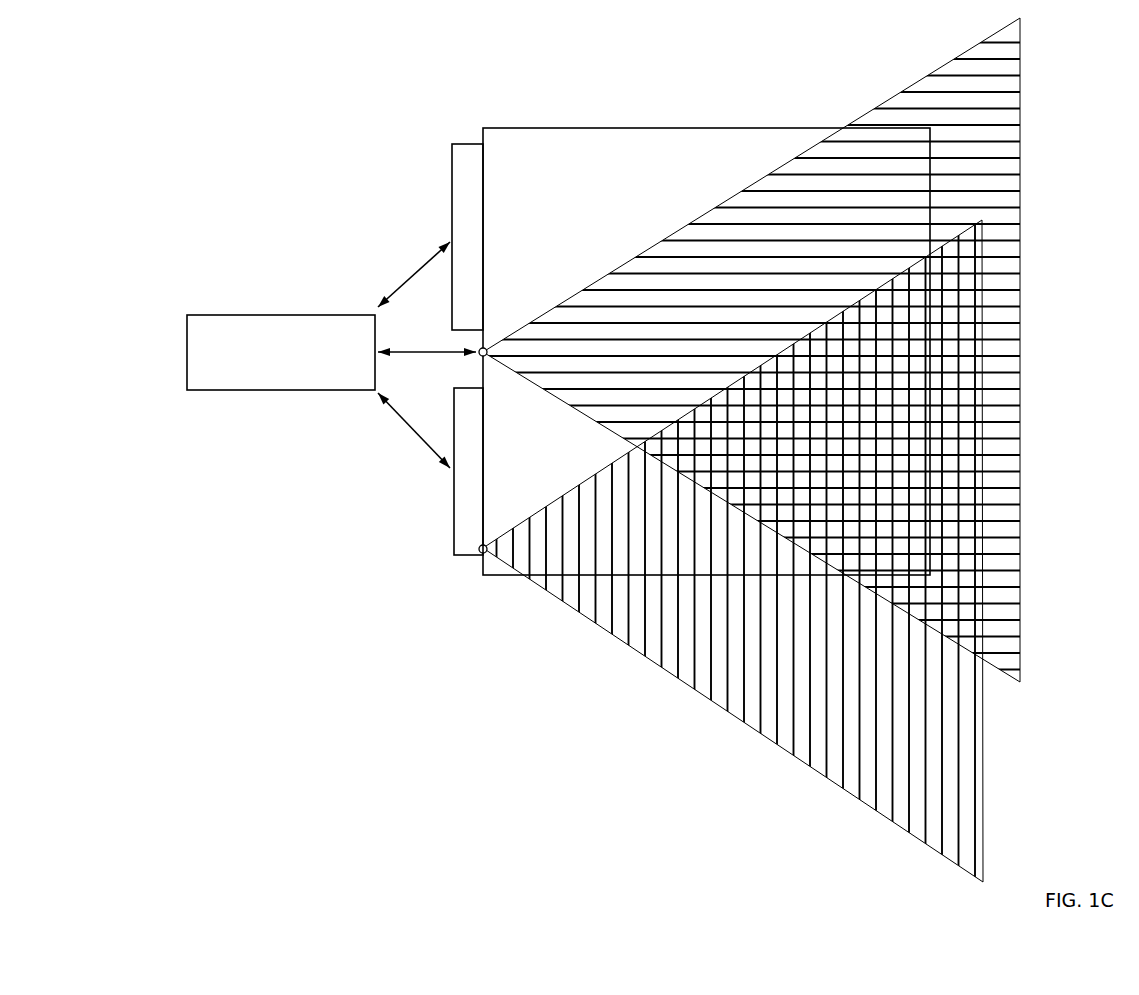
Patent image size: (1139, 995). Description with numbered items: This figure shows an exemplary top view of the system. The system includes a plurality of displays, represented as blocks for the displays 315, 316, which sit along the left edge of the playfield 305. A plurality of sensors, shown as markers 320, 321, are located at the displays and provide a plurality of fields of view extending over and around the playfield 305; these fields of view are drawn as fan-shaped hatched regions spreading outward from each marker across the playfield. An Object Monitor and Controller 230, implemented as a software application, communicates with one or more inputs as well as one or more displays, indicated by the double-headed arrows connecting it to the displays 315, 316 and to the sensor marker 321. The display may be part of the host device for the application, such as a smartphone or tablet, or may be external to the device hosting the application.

The object monitor and controller 230 is at (222, 314).
The playfield 305 is at (617, 128).
The display 315 is at (455, 497).
The display 316 is at (471, 185).
The sensor marker 320 is at (481, 553).
The sensor marker 321 is at (487, 346).